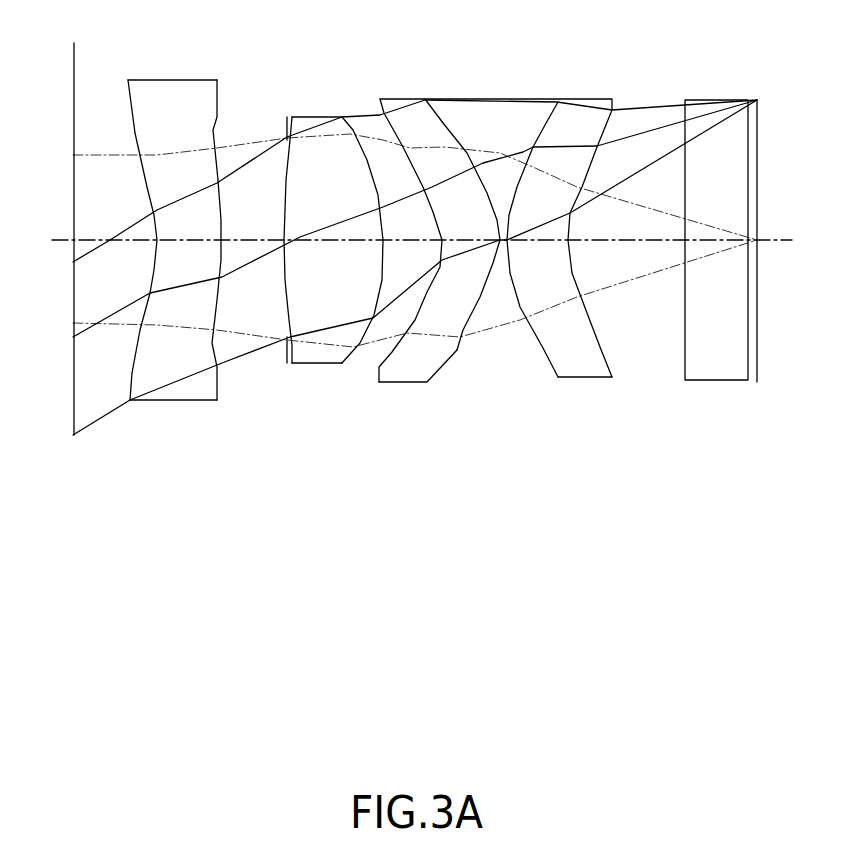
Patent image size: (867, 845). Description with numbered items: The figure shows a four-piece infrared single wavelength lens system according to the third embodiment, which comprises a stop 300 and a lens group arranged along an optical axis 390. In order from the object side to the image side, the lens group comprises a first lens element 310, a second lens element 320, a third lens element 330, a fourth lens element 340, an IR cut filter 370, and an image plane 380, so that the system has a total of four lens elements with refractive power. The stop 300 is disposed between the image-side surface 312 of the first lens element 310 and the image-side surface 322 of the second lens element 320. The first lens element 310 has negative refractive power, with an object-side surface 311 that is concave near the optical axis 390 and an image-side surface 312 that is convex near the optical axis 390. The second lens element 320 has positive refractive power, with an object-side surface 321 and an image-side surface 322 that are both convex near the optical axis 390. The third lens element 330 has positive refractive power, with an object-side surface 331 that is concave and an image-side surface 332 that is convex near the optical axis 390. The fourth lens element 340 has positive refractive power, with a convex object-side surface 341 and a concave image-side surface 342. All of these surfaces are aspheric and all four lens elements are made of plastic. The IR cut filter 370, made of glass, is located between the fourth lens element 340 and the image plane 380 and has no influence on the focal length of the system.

The stop 300 is at (287, 138).
The first lens element 310 is at (175, 247).
The object-side surface of the first lens element 311 is at (130, 373).
The image-side surface of the first lens element 312 is at (212, 343).
The second lens element 320 is at (326, 254).
The object-side surface of the second lens element 321 is at (290, 343).
The image-side surface of the second lens element 322 is at (360, 343).
The third lens element 330 is at (486, 254).
The object-side surface of the third lens element 331 is at (392, 352).
The image-side surface of the third lens element 332 is at (457, 350).
The fourth lens element 340 is at (579, 254).
The object-side surface of the fourth lens element 341 is at (543, 348).
The image-side surface of the fourth lens element 342 is at (603, 348).
The IR cut filter 370 is at (717, 99).
The image plane 380 is at (757, 320).
The optical axis 390 is at (62, 239).